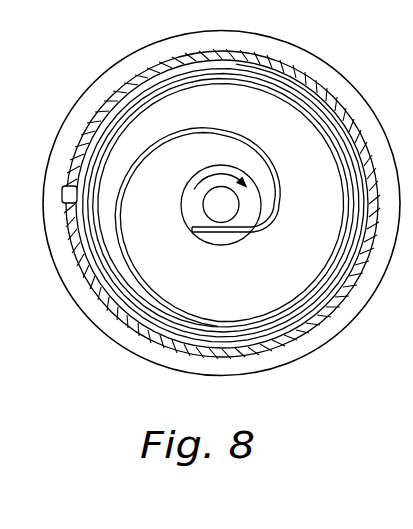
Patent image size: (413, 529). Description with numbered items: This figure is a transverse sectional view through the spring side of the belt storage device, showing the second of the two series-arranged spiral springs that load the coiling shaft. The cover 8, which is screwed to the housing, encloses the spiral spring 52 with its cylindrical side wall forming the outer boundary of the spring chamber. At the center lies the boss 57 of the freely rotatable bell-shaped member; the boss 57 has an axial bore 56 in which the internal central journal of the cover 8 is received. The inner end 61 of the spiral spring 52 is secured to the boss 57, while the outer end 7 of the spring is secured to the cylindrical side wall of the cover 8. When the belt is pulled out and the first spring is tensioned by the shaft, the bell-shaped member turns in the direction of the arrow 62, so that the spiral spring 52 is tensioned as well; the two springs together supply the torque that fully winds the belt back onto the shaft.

The outer end 7 is at (62, 193).
The cover 8 is at (127, 87).
The spiral spring 52 is at (233, 86).
The axial bore 56 is at (213, 211).
The boss 57 is at (186, 200).
The inner end 61 is at (208, 234).
The arrow 62 is at (217, 177).